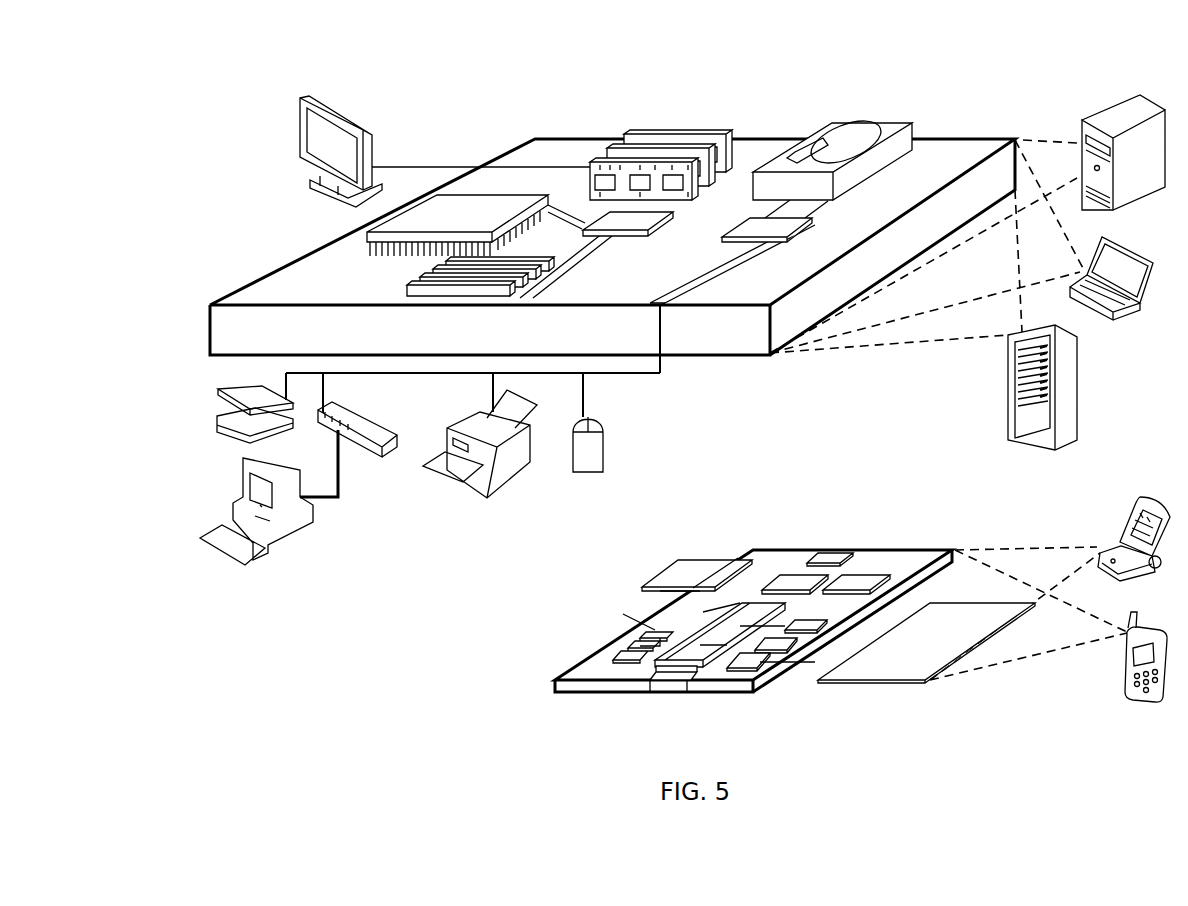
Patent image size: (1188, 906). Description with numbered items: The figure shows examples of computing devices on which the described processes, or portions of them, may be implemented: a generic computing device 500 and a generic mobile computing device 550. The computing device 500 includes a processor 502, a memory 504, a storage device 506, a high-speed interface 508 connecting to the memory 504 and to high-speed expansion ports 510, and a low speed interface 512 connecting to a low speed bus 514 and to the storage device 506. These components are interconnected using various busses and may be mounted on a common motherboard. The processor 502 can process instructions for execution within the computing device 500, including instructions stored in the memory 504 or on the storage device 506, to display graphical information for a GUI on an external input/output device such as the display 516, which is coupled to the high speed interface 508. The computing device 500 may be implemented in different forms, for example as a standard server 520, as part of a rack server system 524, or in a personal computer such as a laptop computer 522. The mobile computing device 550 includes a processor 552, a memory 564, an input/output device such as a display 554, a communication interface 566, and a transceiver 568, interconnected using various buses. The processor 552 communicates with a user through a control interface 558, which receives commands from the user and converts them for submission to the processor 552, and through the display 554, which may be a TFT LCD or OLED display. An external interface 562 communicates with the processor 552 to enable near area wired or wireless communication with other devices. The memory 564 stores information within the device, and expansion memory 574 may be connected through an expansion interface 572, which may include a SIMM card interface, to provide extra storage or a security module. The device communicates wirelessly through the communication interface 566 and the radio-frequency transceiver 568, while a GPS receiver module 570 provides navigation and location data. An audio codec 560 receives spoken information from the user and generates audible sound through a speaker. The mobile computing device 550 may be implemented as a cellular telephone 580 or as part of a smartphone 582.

The computing device 500 is at (469, 117).
The processor 502 is at (367, 242).
The memory 504 is at (641, 131).
The storage device 506 is at (828, 125).
The high-speed interface 508 is at (603, 222).
The high-speed expansion ports 510 is at (425, 280).
The low speed interface 512 is at (767, 228).
The low speed bus 514 is at (663, 320).
The display 516 is at (299, 99).
The standard server 520 is at (1081, 124).
The laptop computer 522 is at (1104, 240).
The rack server system 524 is at (1008, 402).
The mobile computing device 550 is at (741, 530).
The processor 552 is at (702, 667).
The display 554 is at (923, 683).
The control interface 558 is at (790, 652).
The audio codec 560 is at (803, 630).
The external interface 562 is at (670, 681).
The memory 564 is at (630, 647).
The communication interface 566 is at (795, 578).
The transceiver 568 is at (857, 577).
The GPS receiver module 570 is at (834, 555).
The expansion interface 572 is at (736, 560).
The expansion memory 574 is at (680, 561).
The cellular telephone 580 is at (1143, 498).
The smartphone 582 is at (1130, 613).